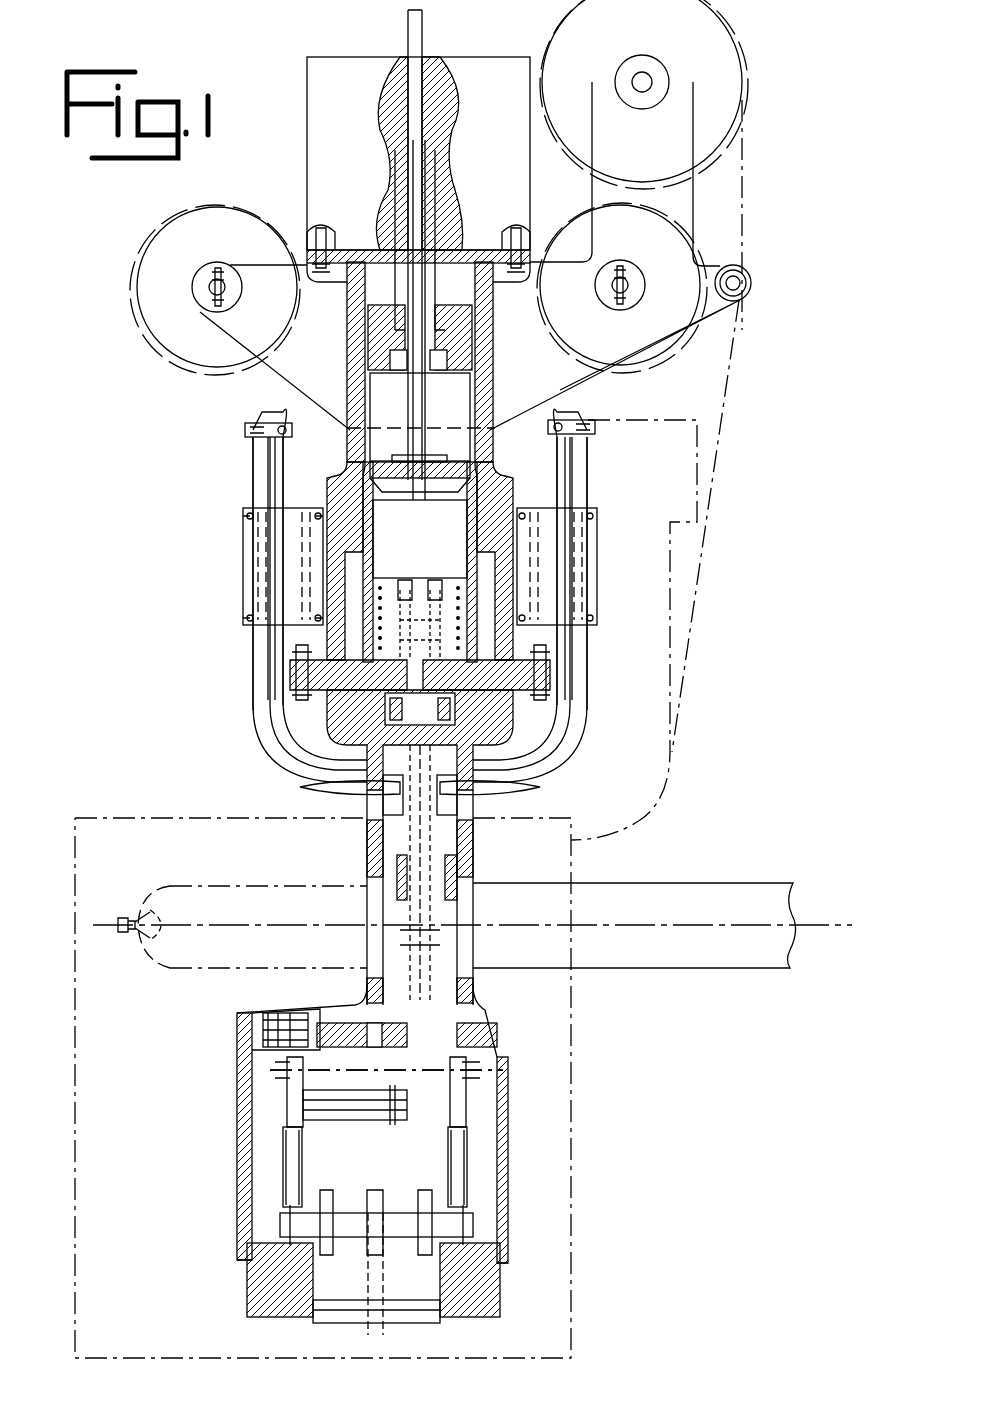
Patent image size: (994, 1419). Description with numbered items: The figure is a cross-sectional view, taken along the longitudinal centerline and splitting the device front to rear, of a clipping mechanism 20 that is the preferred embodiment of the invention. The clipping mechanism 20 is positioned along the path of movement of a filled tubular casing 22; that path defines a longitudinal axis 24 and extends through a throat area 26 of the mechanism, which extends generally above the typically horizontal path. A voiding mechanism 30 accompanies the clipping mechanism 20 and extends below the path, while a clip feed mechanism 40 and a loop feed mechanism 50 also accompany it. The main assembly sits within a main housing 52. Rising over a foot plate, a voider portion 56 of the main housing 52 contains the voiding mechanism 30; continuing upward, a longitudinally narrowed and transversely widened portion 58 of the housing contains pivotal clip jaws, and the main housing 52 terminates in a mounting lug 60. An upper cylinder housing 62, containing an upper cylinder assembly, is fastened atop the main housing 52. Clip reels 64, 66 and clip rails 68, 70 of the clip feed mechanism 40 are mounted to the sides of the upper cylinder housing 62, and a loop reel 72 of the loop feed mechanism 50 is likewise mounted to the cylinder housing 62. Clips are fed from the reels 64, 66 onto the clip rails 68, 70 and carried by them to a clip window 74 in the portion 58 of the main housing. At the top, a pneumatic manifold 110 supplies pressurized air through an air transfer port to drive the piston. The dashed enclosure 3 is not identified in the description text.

The dashed enclosure / section reference 3 is at (571, 1112).
The clipping mechanism 20 is at (212, 628).
The filled tubular casing 22 is at (690, 885).
The longitudinal axis 24 is at (829, 925).
The throat area 26 is at (462, 892).
The voiding mechanism 30 is at (497, 1040).
The clip feed mechanism 40 is at (250, 558).
The loop feed mechanism 50 is at (752, 290).
The main housing 52 is at (330, 722).
The voider portion 56 is at (505, 1195).
The longitudinally narrowed and transversely widened portion 58 is at (368, 840).
The mounting lug 60 is at (330, 772).
The upper cylinder housing 62 is at (340, 490).
The clip reel 64 is at (163, 352).
The clip reel 66 is at (670, 350).
The clip rail 68 is at (250, 453).
The clip rail 70 is at (585, 470).
The loop reel 72 is at (722, 50).
The clip window 74 is at (470, 807).
The pneumatic manifold 110 is at (330, 78).